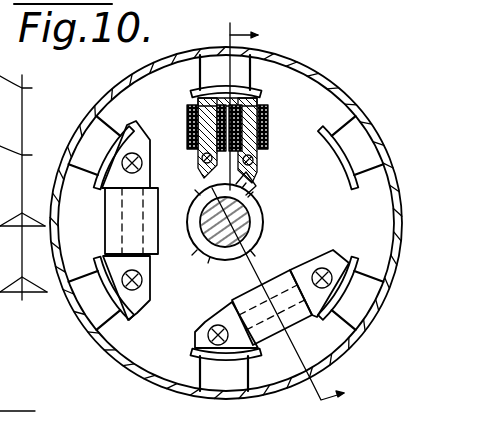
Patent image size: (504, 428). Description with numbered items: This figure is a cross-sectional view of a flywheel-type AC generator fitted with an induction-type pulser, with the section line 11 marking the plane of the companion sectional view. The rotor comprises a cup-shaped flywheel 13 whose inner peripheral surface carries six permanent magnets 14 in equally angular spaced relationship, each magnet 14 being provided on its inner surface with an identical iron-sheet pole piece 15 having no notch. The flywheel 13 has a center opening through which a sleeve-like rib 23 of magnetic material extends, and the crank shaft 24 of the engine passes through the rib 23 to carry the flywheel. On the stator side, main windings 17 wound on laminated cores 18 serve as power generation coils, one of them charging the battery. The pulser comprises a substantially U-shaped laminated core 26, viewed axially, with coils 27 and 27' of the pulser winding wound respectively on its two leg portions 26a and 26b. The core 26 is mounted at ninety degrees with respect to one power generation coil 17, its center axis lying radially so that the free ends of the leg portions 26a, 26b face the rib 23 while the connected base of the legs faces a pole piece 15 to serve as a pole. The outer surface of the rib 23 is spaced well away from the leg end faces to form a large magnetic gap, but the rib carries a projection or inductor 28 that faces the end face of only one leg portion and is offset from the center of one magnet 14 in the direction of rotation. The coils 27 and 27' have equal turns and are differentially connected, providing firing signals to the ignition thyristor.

The section line 11 is at (294, 213).
The flywheel 13 is at (117, 88).
The permanent magnet 14 is at (199, 72).
The pole piece 15 is at (357, 264).
The main winding 17 is at (106, 224).
The laminated core 18 is at (145, 118).
The rib 23 is at (262, 227).
The crank shaft 24 is at (203, 238).
The laminated core 26 is at (260, 146).
The leg portion 26a is at (202, 165).
The leg portion 26b is at (255, 170).
The coil 27 is at (190, 129).
The coil 27' is at (267, 128).
The inductor 28 is at (254, 192).